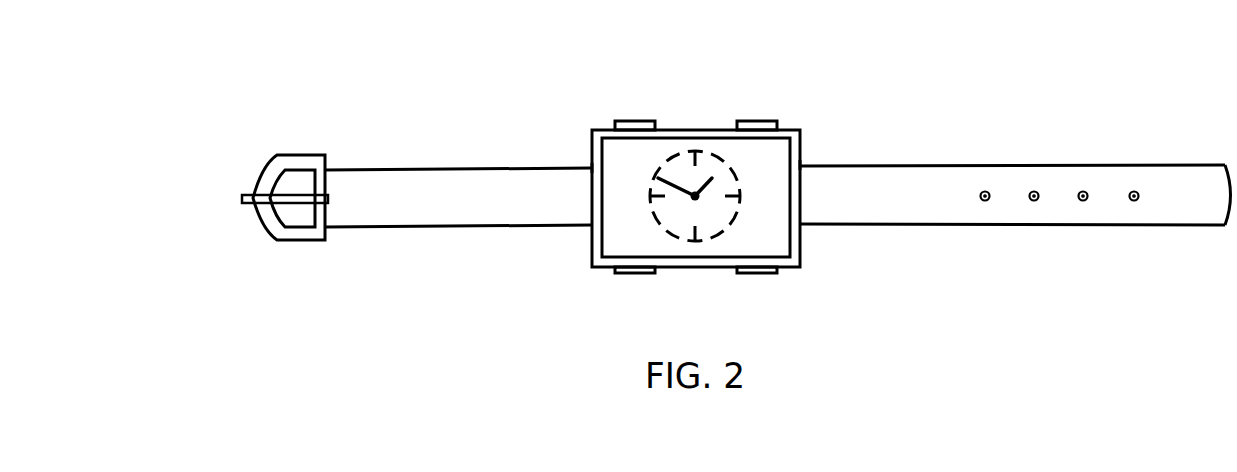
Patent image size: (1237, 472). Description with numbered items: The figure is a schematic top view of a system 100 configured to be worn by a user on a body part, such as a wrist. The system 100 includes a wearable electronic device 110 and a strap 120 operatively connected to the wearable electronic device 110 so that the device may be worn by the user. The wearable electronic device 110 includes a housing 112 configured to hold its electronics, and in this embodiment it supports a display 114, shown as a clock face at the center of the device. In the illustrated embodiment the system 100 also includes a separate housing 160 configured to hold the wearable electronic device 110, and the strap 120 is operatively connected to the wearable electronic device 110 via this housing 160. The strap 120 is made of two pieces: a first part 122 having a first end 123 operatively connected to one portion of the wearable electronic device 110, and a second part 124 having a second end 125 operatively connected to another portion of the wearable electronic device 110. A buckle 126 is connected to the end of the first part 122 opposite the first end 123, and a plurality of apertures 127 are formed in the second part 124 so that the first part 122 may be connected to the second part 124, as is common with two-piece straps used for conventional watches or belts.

The system 100 is at (298, 83).
The wearable electronic device 110 is at (807, 117).
The housing 112 is at (677, 137).
The display 114 is at (722, 150).
The strap 120 is at (1098, 115).
The first part 122 is at (457, 167).
The first end 123 is at (588, 163).
The second part 124 is at (965, 165).
The second end 125 is at (807, 162).
The buckle 126 is at (266, 163).
The apertures 127 is at (985, 202).
The separate housing 160 is at (597, 132).